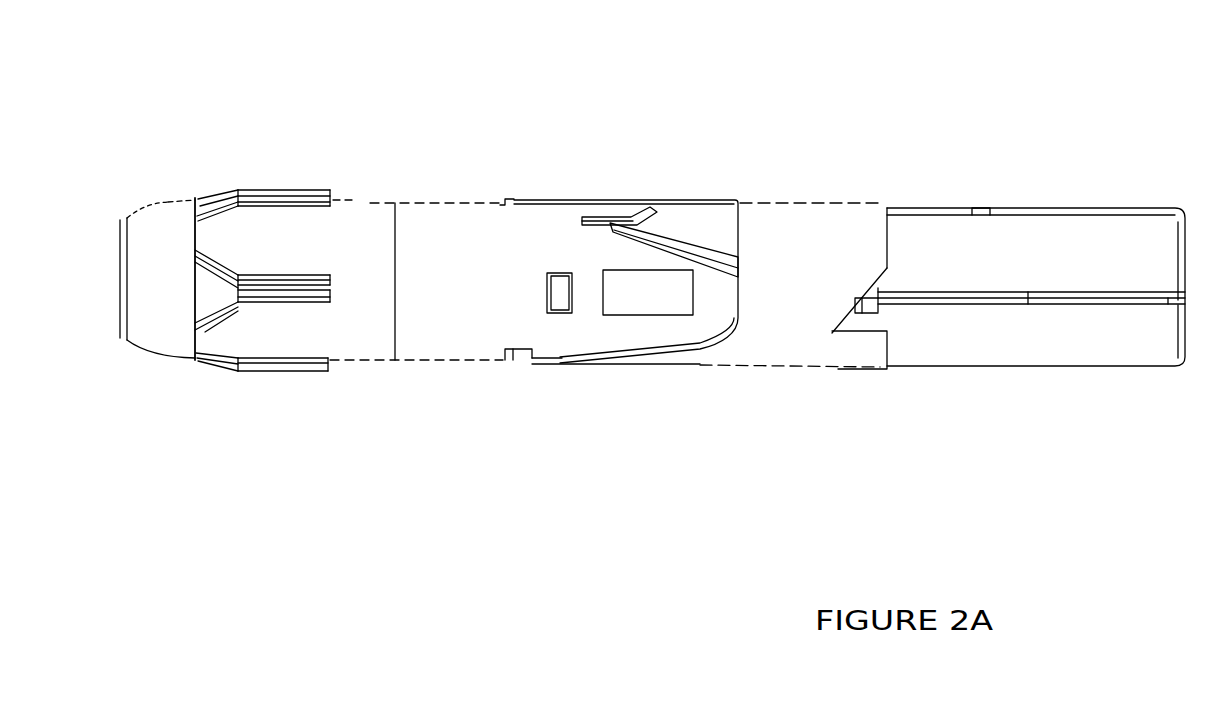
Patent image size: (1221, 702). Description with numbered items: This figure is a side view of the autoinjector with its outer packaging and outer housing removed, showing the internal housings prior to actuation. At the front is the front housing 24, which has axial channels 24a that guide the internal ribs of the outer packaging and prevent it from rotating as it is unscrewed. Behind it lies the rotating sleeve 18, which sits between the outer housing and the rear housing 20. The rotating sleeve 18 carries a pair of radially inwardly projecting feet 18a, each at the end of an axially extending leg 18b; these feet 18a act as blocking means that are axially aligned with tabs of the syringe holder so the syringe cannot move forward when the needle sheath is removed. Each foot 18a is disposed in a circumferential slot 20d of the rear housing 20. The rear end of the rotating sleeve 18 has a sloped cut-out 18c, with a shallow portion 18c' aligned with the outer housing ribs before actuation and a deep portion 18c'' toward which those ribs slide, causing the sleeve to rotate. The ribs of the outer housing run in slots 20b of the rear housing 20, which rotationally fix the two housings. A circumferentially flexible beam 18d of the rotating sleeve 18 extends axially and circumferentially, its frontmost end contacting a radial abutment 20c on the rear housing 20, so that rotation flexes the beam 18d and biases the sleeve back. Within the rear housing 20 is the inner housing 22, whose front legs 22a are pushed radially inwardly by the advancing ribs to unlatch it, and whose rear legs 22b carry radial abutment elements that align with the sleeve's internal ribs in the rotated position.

The rotating sleeve 18 is at (797, 225).
The feet 18a is at (528, 353).
The axially extending leg 18b is at (638, 362).
The sloped cut-out 18c is at (801, 362).
The shallow portion 18c' is at (921, 190).
The deep portion 18c'' is at (834, 382).
The circumferentially flexible beam 18d is at (671, 242).
The rear housing 20 is at (1088, 235).
The slots 20b is at (998, 300).
The radial abutment 20c is at (595, 218).
The circumferential slot 20d is at (620, 313).
The inner housing 22 is at (957, 293).
The front legs 22a is at (857, 303).
The rear legs 22b is at (980, 207).
The front housing 24 is at (367, 337).
The axial channels 24a is at (268, 292).